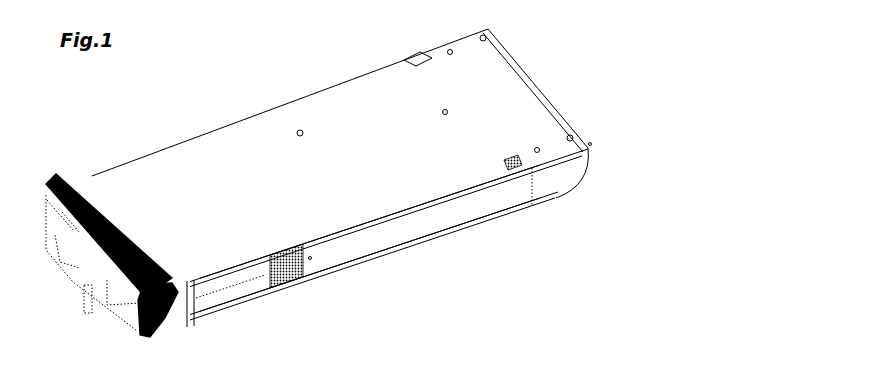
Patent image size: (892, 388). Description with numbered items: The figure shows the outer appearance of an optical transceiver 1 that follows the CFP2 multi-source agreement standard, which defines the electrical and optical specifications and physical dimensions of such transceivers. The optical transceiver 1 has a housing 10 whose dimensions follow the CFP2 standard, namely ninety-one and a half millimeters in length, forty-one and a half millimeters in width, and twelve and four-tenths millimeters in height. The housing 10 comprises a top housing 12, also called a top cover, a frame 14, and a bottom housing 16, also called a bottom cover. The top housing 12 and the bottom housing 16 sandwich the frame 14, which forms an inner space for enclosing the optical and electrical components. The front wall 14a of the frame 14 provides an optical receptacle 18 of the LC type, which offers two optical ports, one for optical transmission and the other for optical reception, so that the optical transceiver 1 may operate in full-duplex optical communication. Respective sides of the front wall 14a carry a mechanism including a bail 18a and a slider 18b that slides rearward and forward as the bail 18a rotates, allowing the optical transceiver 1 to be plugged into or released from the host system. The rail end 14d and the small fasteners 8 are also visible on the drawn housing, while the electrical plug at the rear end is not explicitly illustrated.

The optical transceiver 1 is at (240, 97).
The screw 8 is at (449, 208).
The housing 10 is at (449, 323).
The top housing 12 is at (347, 240).
The frame 14 is at (381, 241).
The front wall 14a is at (103, 318).
The rear rail end 14d is at (510, 204).
The bottom housing 16 is at (407, 213).
The optical receptacle 18 is at (43, 259).
The bail 18a is at (72, 177).
The slider 18b is at (243, 299).